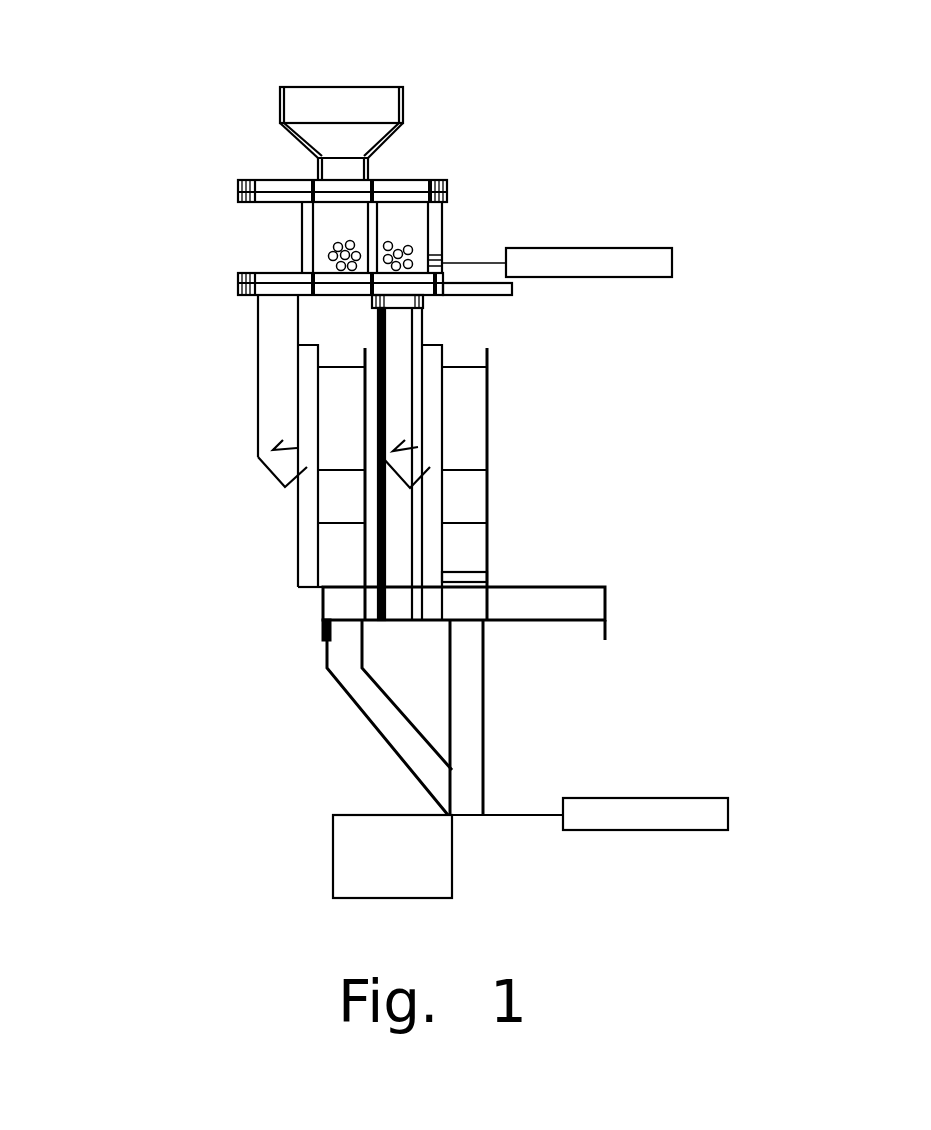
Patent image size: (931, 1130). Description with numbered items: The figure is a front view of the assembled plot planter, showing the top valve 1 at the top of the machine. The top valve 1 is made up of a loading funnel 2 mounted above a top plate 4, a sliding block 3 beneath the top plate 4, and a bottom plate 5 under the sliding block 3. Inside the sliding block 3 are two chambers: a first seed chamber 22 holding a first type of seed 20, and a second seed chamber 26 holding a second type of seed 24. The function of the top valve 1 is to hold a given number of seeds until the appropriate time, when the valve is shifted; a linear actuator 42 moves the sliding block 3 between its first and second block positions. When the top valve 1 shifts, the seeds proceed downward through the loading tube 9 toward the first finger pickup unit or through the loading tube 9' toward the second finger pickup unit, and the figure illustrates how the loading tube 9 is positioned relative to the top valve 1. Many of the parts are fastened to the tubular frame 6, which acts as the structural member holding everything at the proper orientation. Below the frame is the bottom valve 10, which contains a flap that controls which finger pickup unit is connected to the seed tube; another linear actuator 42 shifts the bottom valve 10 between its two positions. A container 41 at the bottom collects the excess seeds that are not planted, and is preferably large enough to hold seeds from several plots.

The top valve 1 is at (453, 198).
The loading funnel 2 is at (405, 87).
The sliding block 3 is at (302, 240).
The top plate 4 is at (258, 180).
The bottom plate 5 is at (513, 296).
The tubular frame 6 is at (605, 607).
The loading tube 9 is at (257, 457).
The loading tube 9' is at (516, 464).
The bottom valve 10 is at (453, 767).
The first type of seed 20 is at (336, 259).
The first seed chamber 22 is at (340, 227).
The second type of seed 24 is at (421, 271).
The second seed chamber 26 is at (415, 217).
The container 41 is at (333, 898).
The linear actuator 42 is at (677, 242).